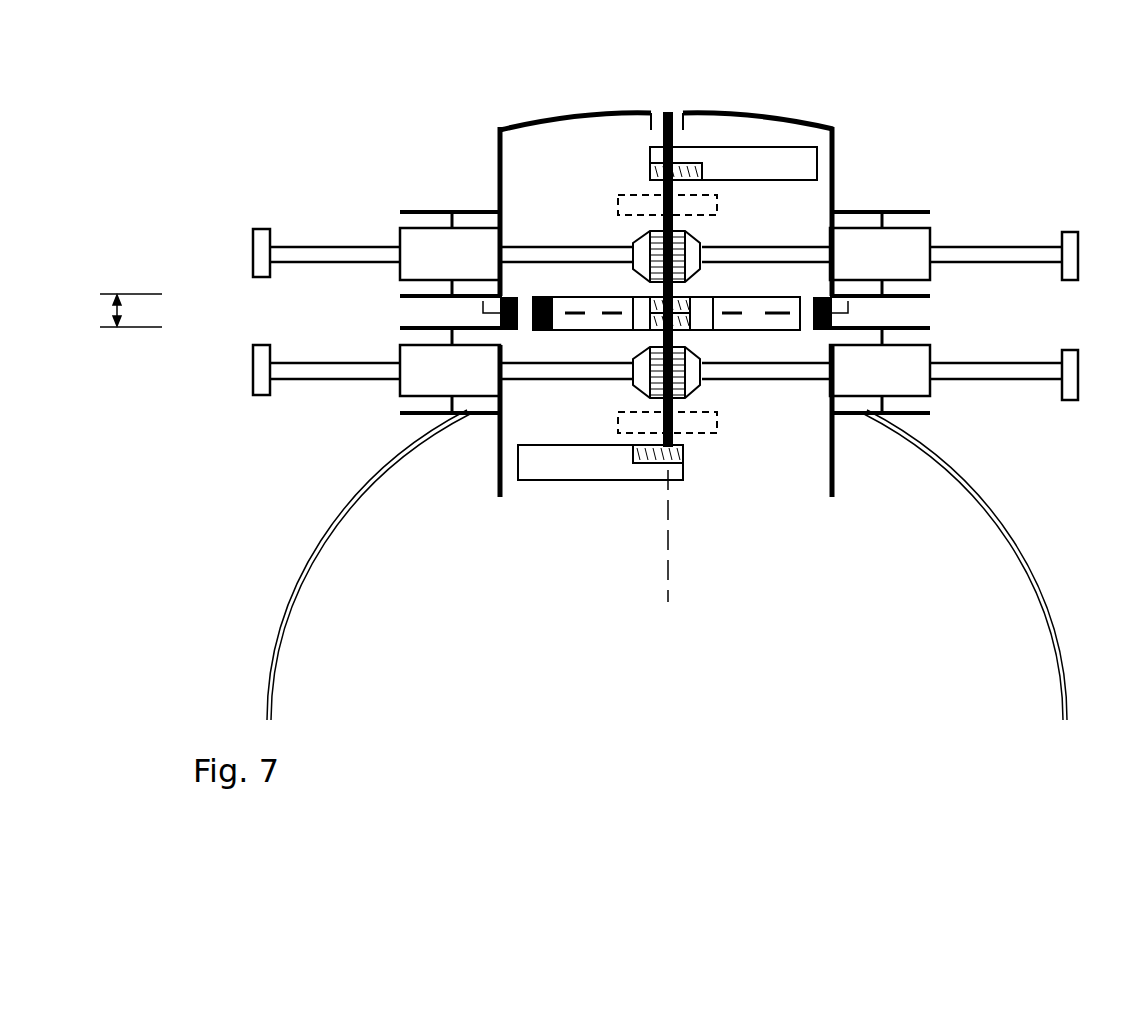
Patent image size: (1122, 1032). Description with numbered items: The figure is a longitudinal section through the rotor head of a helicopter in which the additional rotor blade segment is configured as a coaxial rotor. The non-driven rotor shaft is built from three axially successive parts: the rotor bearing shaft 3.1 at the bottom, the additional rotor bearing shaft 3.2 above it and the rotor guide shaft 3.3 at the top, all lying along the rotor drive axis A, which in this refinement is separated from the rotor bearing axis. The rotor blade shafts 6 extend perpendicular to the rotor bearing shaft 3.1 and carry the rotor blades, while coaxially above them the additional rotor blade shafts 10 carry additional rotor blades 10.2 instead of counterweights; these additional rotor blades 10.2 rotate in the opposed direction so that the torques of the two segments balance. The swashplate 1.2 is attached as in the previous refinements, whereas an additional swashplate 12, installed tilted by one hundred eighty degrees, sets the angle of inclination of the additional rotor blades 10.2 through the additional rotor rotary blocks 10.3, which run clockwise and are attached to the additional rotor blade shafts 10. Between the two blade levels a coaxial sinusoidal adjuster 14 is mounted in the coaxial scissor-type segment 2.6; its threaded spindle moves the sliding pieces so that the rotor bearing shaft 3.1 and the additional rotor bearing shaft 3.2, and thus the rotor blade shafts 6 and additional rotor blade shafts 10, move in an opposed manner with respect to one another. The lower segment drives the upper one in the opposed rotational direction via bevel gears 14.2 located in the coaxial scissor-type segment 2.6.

The rotor guide shaft 3.3 is at (672, 105).
The additional swashplate 12 is at (605, 202).
The additional rotor bearing shaft 3.2 is at (680, 223).
The additional rotor rotary blocks 10.3 is at (647, 237).
The coaxial sinusoidal adjuster 14 is at (607, 288).
The bevel gears 14.2 is at (487, 318).
The additional rotor blade shafts 10 is at (312, 233).
The additional rotor blades 10.2 is at (250, 242).
The coaxial scissor-type segment 2.6 is at (130, 316).
The rotor blade shafts 6 is at (377, 387).
The swashplate 1.2 is at (728, 423).
The rotor bearing shaft 3.1 is at (677, 440).
The rotor drive axis A is at (675, 590).